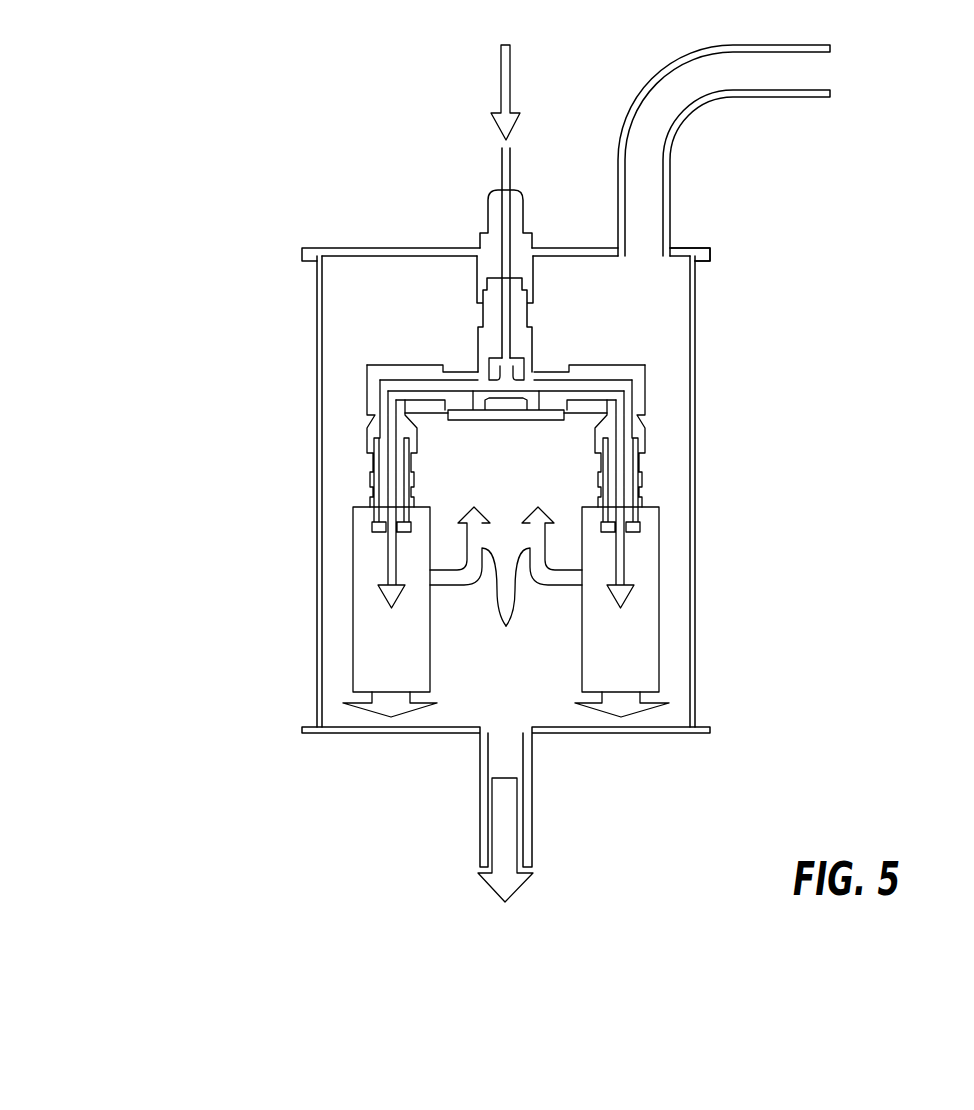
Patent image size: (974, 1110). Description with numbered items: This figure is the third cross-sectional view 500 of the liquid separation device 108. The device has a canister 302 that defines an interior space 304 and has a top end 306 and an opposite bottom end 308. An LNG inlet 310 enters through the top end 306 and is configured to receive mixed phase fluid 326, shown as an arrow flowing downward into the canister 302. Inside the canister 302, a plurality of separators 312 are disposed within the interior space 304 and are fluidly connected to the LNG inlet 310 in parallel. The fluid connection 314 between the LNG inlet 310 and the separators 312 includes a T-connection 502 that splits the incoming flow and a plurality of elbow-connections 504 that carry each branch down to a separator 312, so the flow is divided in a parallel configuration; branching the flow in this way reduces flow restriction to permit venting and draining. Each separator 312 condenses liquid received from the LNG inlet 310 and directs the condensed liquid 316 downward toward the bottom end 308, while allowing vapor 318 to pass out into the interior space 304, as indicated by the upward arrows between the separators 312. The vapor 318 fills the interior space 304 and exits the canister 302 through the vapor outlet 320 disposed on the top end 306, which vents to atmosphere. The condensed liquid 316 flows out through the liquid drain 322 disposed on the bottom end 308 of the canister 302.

The third cross-sectional view 500 is at (148, 307).
The liquid separation device 108 is at (348, 240).
The canister 302 is at (696, 310).
The interior space 304 is at (388, 289).
The top end 306 is at (689, 246).
The bottom end 308 is at (550, 735).
The LNG inlet 310 is at (525, 210).
The separators 312 is at (356, 655).
The fluid connection 314 is at (550, 288).
The condensed liquid 316 is at (370, 708).
The vapor 318 is at (506, 581).
The vapor outlet 320 is at (685, 57).
The liquid drain 322 is at (482, 798).
The mixed phase fluid 326 is at (500, 74).
The T-connection 502 is at (546, 363).
The elbow-connections 504 is at (368, 394).